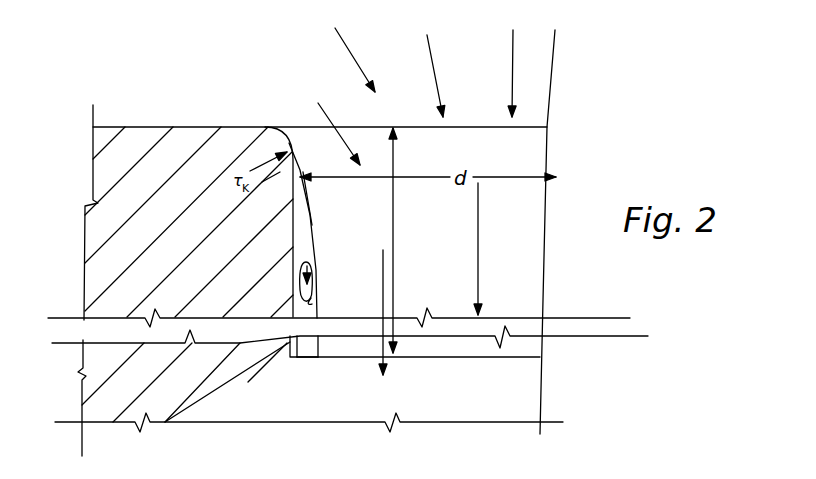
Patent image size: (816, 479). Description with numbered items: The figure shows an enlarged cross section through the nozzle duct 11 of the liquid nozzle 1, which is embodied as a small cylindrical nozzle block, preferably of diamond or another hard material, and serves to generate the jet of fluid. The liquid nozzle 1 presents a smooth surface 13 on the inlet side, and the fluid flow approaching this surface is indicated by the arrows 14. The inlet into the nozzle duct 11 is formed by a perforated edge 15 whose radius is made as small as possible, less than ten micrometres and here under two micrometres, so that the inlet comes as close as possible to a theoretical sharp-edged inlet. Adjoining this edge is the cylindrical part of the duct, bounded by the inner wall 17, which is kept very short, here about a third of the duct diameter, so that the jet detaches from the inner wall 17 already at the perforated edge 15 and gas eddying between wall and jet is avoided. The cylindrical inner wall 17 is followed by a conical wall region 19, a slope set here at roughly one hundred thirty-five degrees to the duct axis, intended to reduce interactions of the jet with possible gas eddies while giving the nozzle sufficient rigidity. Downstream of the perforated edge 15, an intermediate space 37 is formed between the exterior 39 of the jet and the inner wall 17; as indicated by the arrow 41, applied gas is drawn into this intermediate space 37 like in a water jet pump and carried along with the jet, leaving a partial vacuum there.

The liquid nozzle 1 is at (81, 238).
The nozzle duct 11 is at (427, 166).
The smooth surface 13 is at (162, 127).
The hot gas flow 14 is at (240, 78).
The perforated edge 15 is at (286, 137).
The inner wall 17 is at (292, 255).
The conical wall region 19 is at (240, 380).
The intermediate space 37 is at (302, 220).
The exterior of the jet of fluid 39 is at (317, 300).
The arrow 41 is at (298, 357).